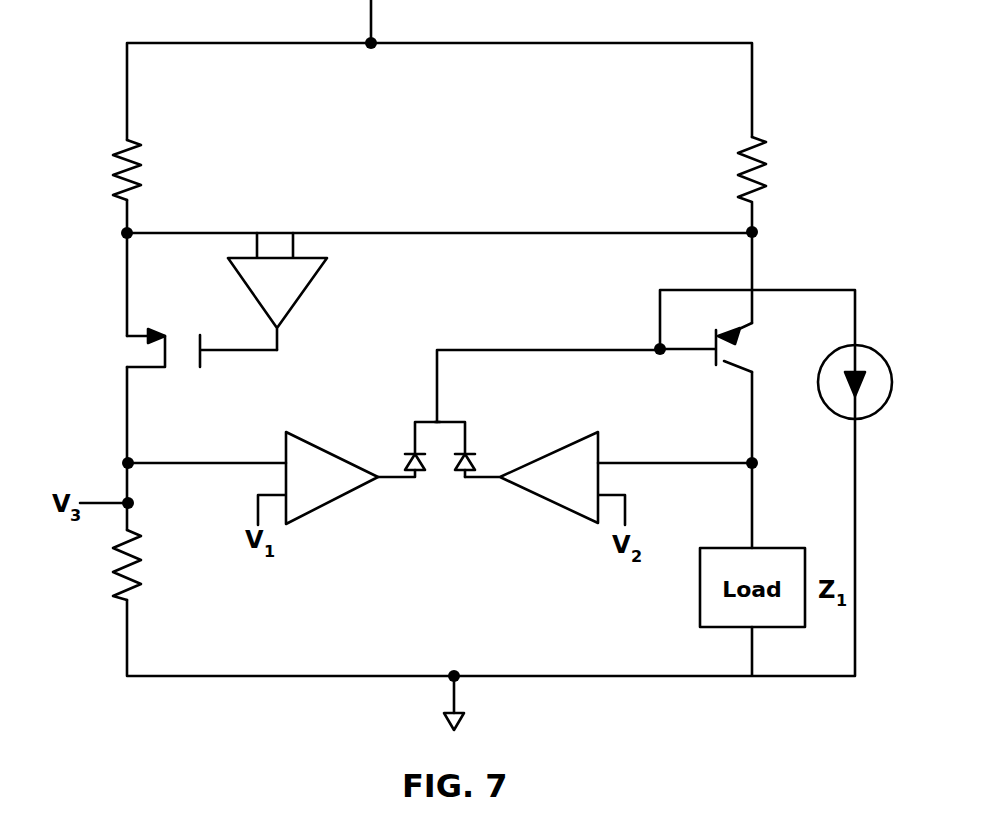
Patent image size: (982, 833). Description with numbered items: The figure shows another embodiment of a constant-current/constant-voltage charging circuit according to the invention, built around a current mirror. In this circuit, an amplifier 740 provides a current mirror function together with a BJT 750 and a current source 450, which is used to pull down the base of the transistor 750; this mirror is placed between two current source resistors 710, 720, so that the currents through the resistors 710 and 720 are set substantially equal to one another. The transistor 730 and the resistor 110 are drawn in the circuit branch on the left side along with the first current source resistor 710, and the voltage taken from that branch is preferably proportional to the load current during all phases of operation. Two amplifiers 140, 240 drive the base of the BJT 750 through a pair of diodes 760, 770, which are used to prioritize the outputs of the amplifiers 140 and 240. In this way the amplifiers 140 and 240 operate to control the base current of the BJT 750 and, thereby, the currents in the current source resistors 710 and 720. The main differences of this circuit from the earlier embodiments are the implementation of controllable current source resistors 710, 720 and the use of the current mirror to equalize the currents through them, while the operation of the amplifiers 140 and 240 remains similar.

The current source resistor 710 is at (112, 165).
The current source resistor 720 is at (762, 175).
The transistor 730 is at (140, 351).
The amplifier 740 is at (318, 272).
The BJT 750 is at (752, 350).
The current source 450 is at (890, 366).
The diode 760 is at (428, 420).
The diode 770 is at (452, 420).
The resistor 110 is at (142, 572).
The amplifier 140 is at (330, 504).
The amplifier 240 is at (553, 505).